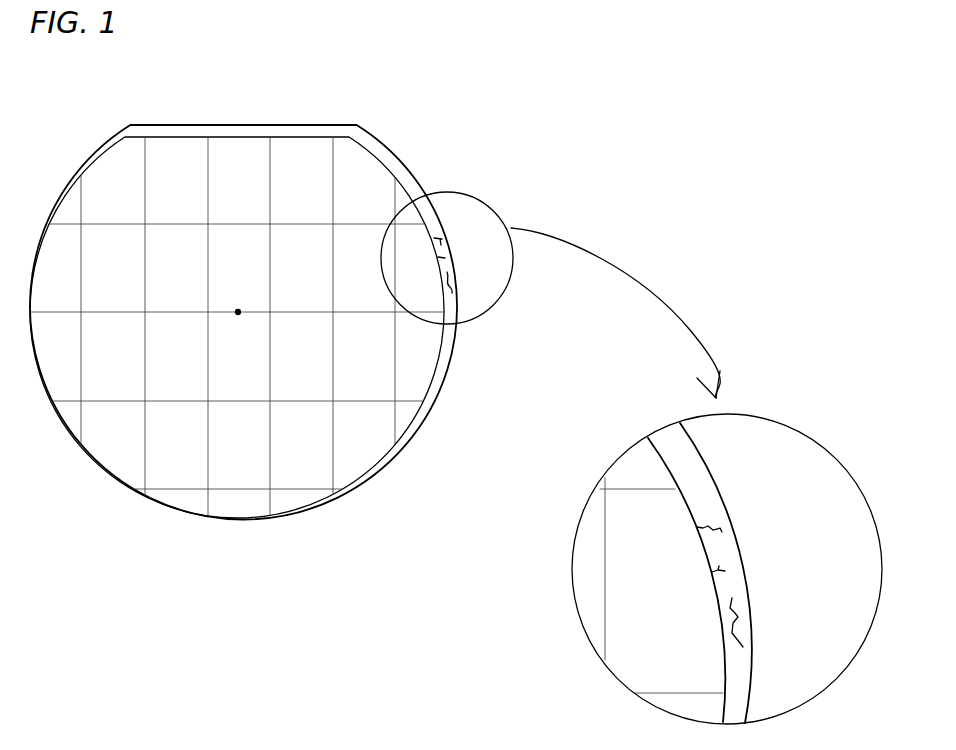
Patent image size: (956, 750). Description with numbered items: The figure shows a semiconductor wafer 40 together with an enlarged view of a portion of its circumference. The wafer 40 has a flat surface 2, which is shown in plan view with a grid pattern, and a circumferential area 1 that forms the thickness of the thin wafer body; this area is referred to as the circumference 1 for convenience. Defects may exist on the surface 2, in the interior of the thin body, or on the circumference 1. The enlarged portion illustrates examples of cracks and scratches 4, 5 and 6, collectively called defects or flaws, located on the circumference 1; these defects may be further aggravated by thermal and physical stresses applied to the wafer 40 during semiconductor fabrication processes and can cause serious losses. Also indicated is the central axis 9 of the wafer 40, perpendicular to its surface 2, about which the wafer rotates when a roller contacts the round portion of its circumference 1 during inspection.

The wafer 40 is at (263, 93).
The circumference 1 is at (318, 128).
The surface 2 is at (229, 449).
The central axis 9 is at (238, 312).
The crack or scratch 4 is at (733, 625).
The crack or scratch 5 is at (712, 572).
The crack or scratch 6 is at (712, 528).